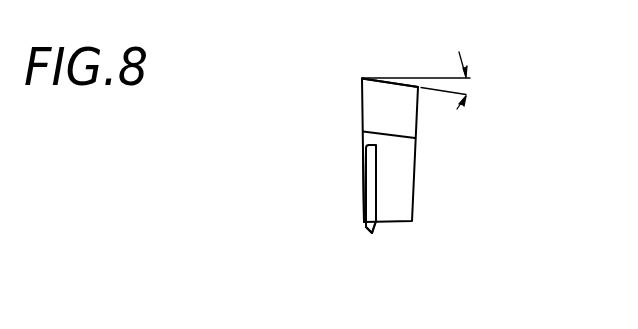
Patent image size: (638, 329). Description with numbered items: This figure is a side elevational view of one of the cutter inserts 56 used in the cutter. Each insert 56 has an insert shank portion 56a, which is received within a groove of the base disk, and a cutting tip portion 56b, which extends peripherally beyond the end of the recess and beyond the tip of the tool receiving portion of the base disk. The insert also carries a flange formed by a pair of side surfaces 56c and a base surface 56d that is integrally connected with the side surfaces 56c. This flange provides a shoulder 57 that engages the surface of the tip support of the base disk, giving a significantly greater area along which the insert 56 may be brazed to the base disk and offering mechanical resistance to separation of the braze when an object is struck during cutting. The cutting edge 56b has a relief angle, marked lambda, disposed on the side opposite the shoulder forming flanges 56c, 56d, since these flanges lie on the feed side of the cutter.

The insert 56 is at (361, 108).
The insert shank portion 56a is at (403, 193).
The cutting tip portion 56b is at (403, 82).
The side surfaces 56c is at (363, 189).
The base surface 56d is at (372, 233).
The shoulder 57 is at (375, 170).